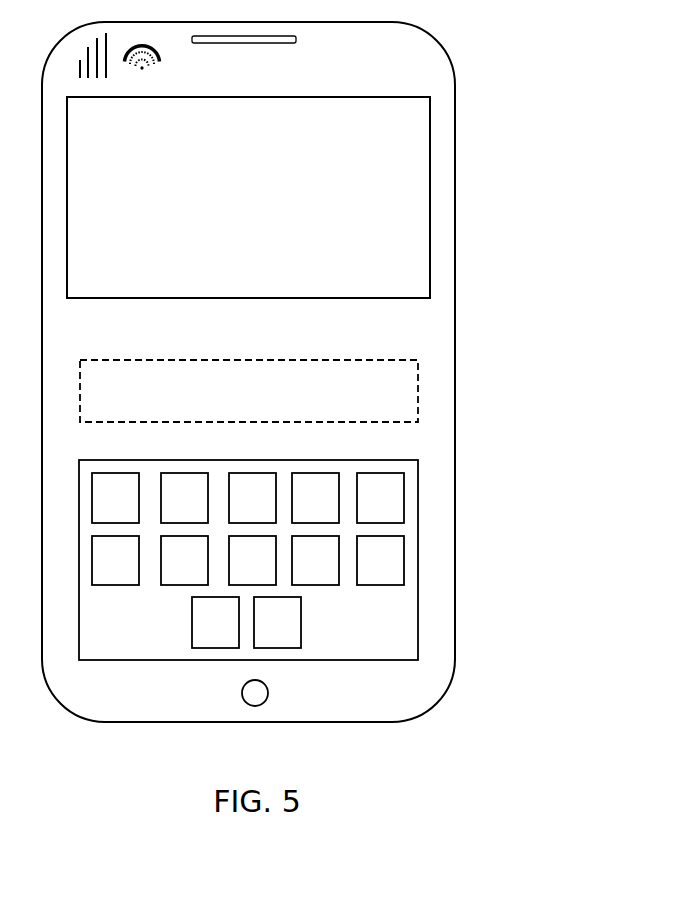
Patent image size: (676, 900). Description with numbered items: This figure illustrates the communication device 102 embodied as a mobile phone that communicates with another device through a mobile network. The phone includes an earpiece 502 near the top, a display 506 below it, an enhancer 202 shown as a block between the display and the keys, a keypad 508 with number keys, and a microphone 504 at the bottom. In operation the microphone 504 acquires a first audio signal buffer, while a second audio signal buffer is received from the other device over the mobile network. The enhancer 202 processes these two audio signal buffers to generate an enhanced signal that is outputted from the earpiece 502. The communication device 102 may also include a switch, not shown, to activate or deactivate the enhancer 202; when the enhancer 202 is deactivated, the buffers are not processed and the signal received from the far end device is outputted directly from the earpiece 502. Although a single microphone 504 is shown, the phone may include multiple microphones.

The communication device 102 is at (455, 372).
The earpiece 502 is at (296, 39).
The display 506 is at (248, 197).
The enhancer 202 is at (249, 391).
The keypad 508 is at (418, 558).
The microphone 504 is at (268, 692).